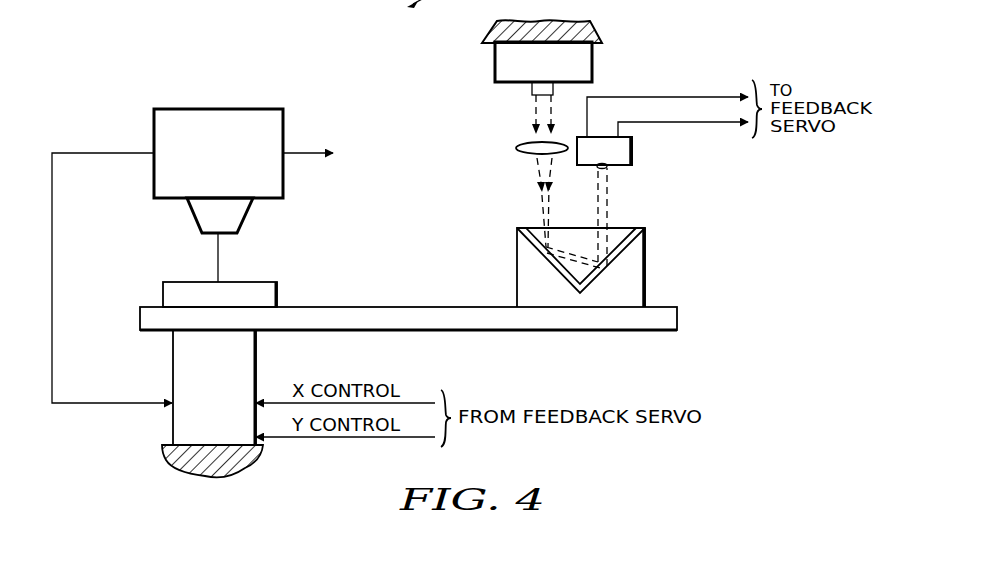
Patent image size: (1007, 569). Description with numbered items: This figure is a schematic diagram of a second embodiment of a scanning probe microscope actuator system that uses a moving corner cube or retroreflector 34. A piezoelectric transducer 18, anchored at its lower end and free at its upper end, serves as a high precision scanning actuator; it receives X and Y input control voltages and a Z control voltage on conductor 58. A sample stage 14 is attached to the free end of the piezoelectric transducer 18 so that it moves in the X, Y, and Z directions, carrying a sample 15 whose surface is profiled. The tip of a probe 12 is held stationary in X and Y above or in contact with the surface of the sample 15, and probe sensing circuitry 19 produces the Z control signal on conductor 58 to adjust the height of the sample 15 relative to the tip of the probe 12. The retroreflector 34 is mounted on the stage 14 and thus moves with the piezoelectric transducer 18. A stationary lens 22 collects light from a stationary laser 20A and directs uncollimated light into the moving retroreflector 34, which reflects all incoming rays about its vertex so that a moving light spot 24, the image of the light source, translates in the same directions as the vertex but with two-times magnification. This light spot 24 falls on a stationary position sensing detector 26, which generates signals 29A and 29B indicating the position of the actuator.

The probe 12 is at (216, 250).
The sample stage 14 is at (372, 317).
The sample 15 is at (279, 283).
The piezoelectric transducer 18 is at (256, 370).
The probe sensing circuitry 19 is at (254, 109).
The laser 20A is at (592, 70).
The lens 22 is at (518, 150).
The light spot 24 is at (604, 169).
The position sensing detector 26 is at (632, 152).
The signal 29A is at (668, 97).
The signal 29B is at (669, 105).
The retroreflector 34 is at (656, 275).
The conductor 58 is at (52, 258).